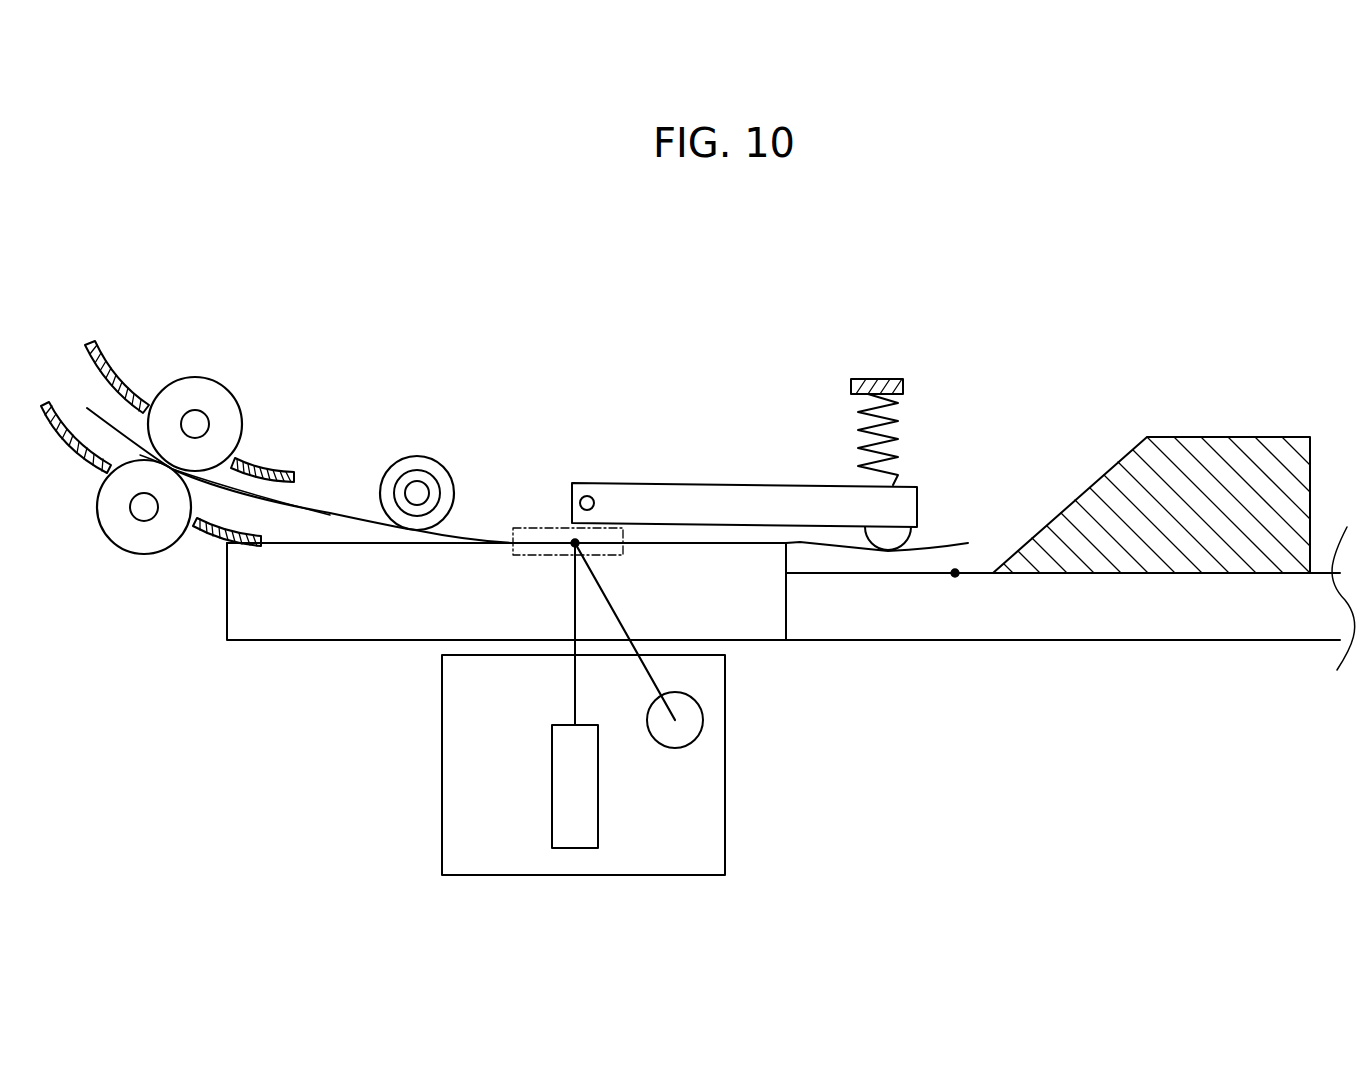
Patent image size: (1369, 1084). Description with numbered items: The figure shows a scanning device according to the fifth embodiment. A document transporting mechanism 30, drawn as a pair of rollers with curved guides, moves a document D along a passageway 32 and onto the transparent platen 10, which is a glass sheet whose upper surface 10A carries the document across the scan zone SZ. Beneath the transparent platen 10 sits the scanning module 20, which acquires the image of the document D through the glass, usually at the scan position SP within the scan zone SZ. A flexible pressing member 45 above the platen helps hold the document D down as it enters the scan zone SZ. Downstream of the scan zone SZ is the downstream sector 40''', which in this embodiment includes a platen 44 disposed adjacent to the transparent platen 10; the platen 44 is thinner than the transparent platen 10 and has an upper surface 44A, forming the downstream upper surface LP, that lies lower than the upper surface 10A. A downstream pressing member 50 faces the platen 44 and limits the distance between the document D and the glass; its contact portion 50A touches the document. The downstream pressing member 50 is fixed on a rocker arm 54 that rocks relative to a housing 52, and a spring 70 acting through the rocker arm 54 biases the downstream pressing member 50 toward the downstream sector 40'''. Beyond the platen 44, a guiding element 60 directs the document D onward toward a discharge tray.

The transparent platen 10 is at (267, 628).
The upper surface of the transparent platen 10A is at (370, 540).
The scanning module 20 is at (442, 768).
The document transporting mechanism 30 is at (215, 403).
The passageway 32 is at (123, 415).
The platen 44 is at (830, 622).
The upper surface of the platen 44A is at (815, 575).
The flexible pressing member 45 is at (428, 456).
The downstream pressing member 50 is at (907, 538).
The contact portion 50A is at (885, 552).
The housing 52 is at (880, 378).
The rocker arm 54 is at (722, 490).
The guiding element 60 is at (1193, 453).
The spring 70 is at (890, 455).
The downstream sector 40''' is at (1070, 638).
The document D is at (322, 508).
The scan position SP is at (580, 540).
The scan zone SZ is at (518, 556).
The upper surface of the downstream sector LP is at (955, 577).